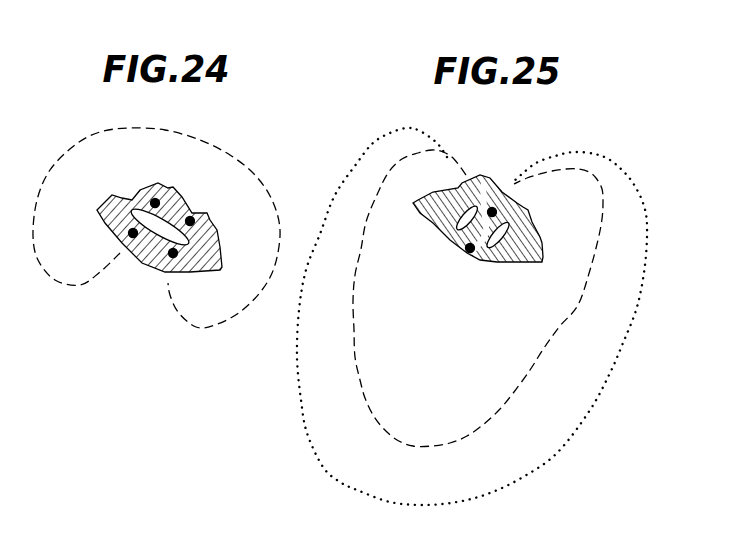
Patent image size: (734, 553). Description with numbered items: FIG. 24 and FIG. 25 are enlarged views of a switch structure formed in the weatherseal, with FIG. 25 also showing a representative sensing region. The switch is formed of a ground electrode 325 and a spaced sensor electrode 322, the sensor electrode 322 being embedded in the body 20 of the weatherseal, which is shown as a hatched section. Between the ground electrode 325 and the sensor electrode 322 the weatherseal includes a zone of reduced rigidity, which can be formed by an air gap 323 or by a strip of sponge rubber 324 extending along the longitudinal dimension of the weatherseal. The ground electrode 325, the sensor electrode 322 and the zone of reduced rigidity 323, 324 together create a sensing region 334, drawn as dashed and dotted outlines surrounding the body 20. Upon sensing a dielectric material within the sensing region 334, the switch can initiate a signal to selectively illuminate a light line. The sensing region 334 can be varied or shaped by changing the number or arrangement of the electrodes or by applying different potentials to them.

In FIG. 24, the body 20 is at (214, 236).
In FIG. 25, the body 20 is at (539, 223).
In FIG. 24, the sensor electrode 322 is at (158, 184).
In FIG. 25, the sensor electrode 322 is at (470, 249).
In FIG. 24, the air gap 323 is at (140, 209).
In FIG. 25, the strip of sponge rubber 324 is at (497, 248).
In FIG. 24, the ground electrode 325 is at (130, 233).
In FIG. 25, the ground electrode 325 is at (500, 197).
In FIG. 24, the sensing region 334 is at (199, 144).
In FIG. 25, the sensing region 334 is at (637, 182).